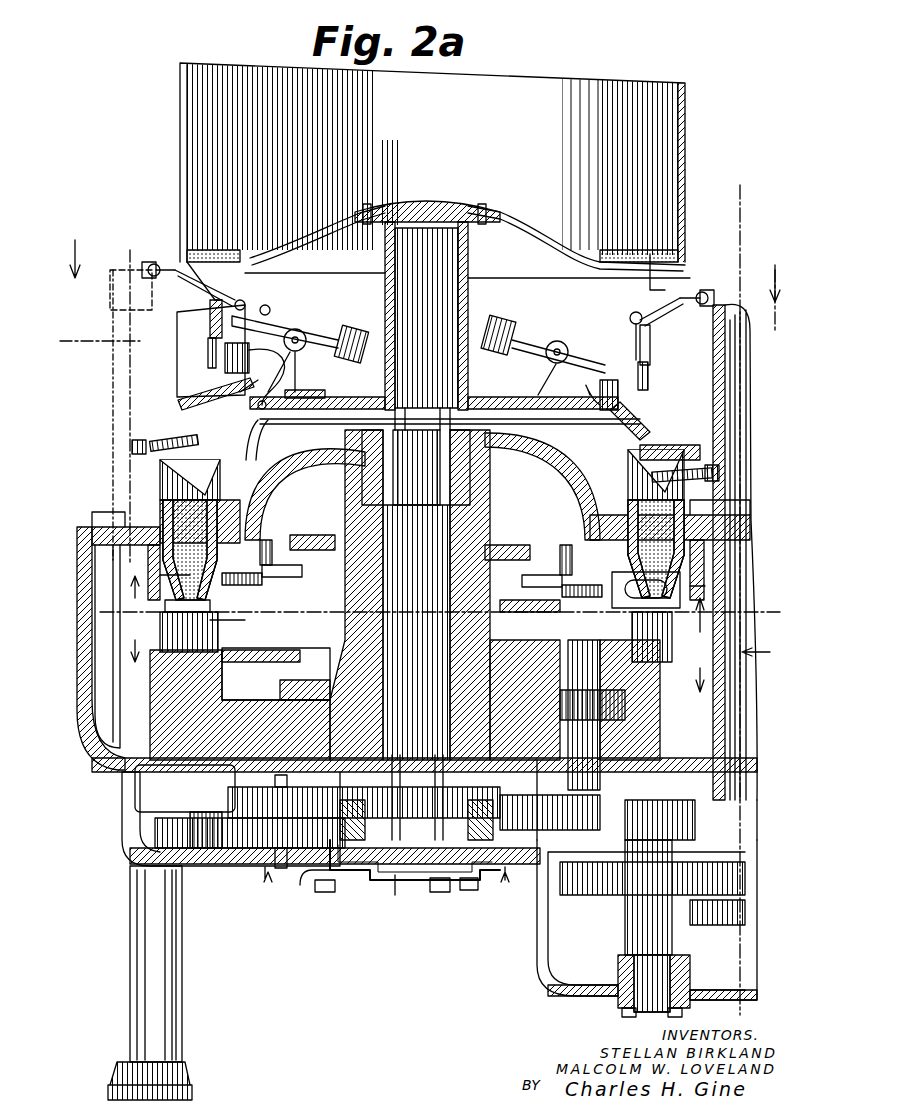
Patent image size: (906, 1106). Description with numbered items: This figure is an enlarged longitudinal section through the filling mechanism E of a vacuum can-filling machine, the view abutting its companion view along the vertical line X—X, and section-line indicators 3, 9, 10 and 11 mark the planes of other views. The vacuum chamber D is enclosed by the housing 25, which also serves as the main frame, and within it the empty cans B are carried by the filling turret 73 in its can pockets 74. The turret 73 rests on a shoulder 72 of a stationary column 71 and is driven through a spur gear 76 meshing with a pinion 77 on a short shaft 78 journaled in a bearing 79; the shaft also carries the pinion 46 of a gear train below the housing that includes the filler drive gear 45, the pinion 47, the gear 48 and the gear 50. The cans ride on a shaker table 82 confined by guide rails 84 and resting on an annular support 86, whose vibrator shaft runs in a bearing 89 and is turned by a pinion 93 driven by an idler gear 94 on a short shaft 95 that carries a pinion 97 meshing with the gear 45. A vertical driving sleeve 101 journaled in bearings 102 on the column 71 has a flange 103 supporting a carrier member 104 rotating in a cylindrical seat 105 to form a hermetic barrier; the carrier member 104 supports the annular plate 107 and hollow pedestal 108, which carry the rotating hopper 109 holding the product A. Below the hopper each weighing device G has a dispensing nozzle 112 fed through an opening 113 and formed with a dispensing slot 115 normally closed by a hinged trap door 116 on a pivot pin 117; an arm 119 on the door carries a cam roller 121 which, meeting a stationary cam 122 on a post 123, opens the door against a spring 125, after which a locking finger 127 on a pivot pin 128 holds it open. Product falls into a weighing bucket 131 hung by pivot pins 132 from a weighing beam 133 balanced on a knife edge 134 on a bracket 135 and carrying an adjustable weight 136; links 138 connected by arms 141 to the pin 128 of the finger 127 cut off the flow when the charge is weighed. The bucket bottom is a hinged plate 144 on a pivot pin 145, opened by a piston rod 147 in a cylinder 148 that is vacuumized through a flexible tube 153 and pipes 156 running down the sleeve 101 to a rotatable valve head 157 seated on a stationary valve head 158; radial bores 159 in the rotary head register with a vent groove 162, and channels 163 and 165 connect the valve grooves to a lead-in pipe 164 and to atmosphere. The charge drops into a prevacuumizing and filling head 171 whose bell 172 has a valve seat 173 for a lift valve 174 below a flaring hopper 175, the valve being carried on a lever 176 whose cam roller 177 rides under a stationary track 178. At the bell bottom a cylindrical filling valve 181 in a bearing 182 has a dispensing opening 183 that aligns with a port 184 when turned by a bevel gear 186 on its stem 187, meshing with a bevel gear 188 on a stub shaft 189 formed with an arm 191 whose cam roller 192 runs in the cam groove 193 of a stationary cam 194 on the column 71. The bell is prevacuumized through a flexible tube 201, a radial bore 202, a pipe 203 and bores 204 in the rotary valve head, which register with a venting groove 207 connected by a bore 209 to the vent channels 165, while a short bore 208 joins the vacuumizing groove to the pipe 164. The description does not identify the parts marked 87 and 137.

The hopper 109 is at (688, 125).
The cover sheet 113 is at (568, 265).
The plate 112 is at (606, 287).
The central tube 108 is at (470, 262).
The chamber box 131 is at (177, 376).
The seal 115 is at (652, 258).
The link 117 is at (200, 262).
The bolt 121 is at (706, 288).
The rod 116 is at (652, 312).
The bracket 122 is at (110, 296).
The lever 119 is at (684, 261).
The motor 136 is at (495, 320).
The shaft 133 is at (540, 320).
The valve 134 is at (556, 340).
The strut 135 is at (414, 375).
The post 137 is at (324, 372).
The pivot 125 is at (253, 295).
The pivot 141 is at (257, 312).
The pivot 128 is at (630, 314).
The arm 127 is at (632, 326).
The slide 138 is at (640, 347).
The cylinder 132 is at (423, 361).
The cylinder 148 is at (618, 395).
The arm 145 is at (220, 379).
The lever 144 is at (422, 409).
The pivot 147 is at (247, 399).
The hose 153 is at (426, 377).
The vacuum pipe 156 is at (405, 760).
The pipe 203 is at (470, 770).
The arcuate guide 107 is at (300, 465).
The passage 202 is at (500, 466).
The tube 201 is at (267, 440).
The housing 103 is at (418, 496).
The housing 102 is at (360, 742).
The plate 104 is at (540, 490).
The plate 105 is at (745, 520).
The funnel 172 is at (640, 548).
The material 173 is at (660, 500).
The gate 181 is at (672, 606).
The wall 171 is at (706, 572).
The slot 183 is at (160, 574).
The chute 174 is at (434, 477).
The chute wall 175 is at (670, 460).
The rod 176 is at (712, 472).
The knob 177 is at (720, 473).
The bracket 178 is at (708, 440).
The sleeve 184 is at (674, 632).
The shaft 182 is at (242, 606).
The gear 186 is at (412, 592).
The bracket 188 is at (522, 583).
The gear 189 is at (553, 602).
The post 191 is at (416, 547).
The plate 192 is at (422, 528).
The plate 193 is at (499, 521).
The plate 194 is at (341, 519).
The outer shell 25 is at (752, 388).
The housing block 87 is at (180, 690).
The housing 82 is at (134, 721).
The housing 86 is at (215, 735).
The plate 84 is at (160, 652).
The bearing 76 is at (280, 693).
The hub 71 is at (355, 598).
The hub 72 is at (330, 712).
The main shaft 101 is at (425, 658).
The hub 73 is at (505, 595).
The plate 74 is at (590, 655).
The bearing 187 is at (593, 628).
The gear 77 is at (632, 700).
The shaft 78 is at (600, 725).
The bearing 79 is at (610, 745).
The gear 97 is at (288, 778).
The gear 45 is at (538, 803).
The gear 46 is at (540, 800).
The housing 89 is at (195, 790).
The gear 93 is at (205, 812).
The gear 94 is at (160, 836).
The base plate 95 is at (225, 868).
The vacuum passage 204 is at (472, 862).
The passage 207 is at (497, 862).
The vacuum line 164 is at (298, 893).
The valve 208 is at (325, 896).
The valve 163 is at (349, 909).
The port 159 is at (395, 914).
The port 157 is at (408, 893).
The port 158 is at (378, 926).
The valve 162 is at (443, 895).
The valve 165 is at (473, 897).
The passage 209 is at (497, 902).
The section line 10 is at (391, 895).
The leg E is at (110, 762).
The gear 48 is at (612, 890).
The gear 47 is at (682, 818).
The gear 50 is at (710, 926).
The section line 3 is at (424, 392).
The axis G is at (100, 341).
The axis 123 is at (113, 405).
The axis X is at (728, 599).
The section line 9 is at (440, 634).
The section line 11 is at (415, 693).
The direction D is at (762, 652).
The point B is at (183, 618).
The point A is at (650, 258).